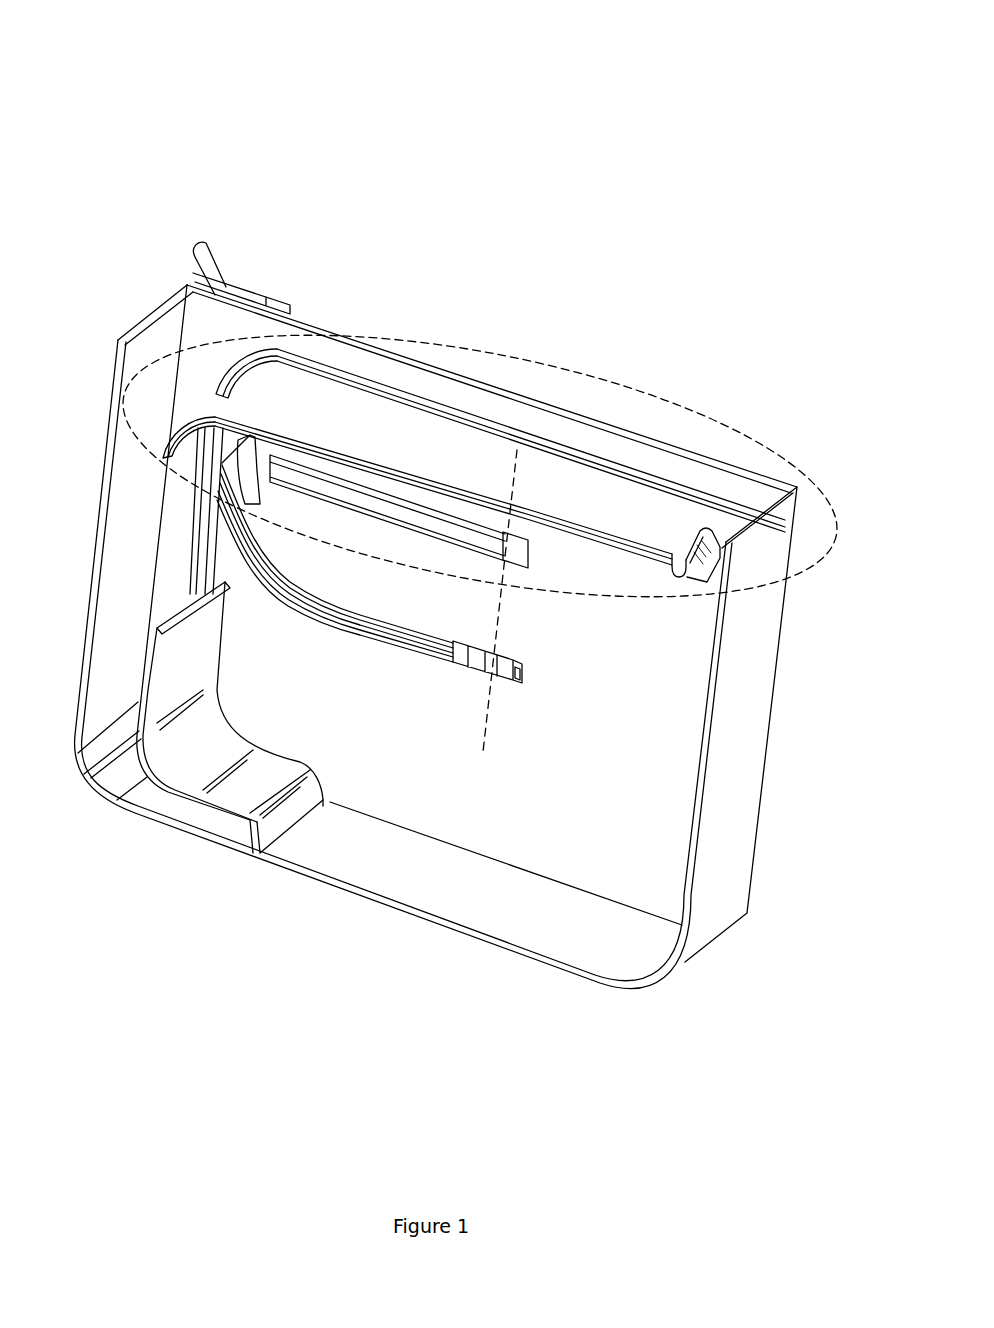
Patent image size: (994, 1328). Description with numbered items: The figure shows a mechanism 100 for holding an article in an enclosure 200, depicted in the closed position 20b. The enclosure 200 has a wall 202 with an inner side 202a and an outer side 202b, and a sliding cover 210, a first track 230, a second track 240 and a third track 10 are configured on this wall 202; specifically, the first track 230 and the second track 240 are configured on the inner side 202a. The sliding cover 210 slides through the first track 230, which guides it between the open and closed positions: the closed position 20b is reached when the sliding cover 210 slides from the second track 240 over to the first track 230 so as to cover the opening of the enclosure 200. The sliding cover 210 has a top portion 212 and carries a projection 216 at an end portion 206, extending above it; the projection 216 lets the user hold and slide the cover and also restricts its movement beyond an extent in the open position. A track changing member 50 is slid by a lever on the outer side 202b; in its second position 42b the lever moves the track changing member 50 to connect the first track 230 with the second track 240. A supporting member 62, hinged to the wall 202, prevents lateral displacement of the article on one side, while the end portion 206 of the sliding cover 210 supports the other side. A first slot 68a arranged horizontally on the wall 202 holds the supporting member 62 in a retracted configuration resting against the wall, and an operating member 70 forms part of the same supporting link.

The mechanism 100 is at (519, 156).
The third track 10 is at (365, 637).
The closed position 20b is at (538, 360).
The second position 42b is at (217, 255).
The track changing member 50 is at (196, 479).
The supporting member 62 is at (530, 557).
The first slot 68a is at (390, 520).
The operating member 70 is at (488, 676).
The enclosure 200 is at (314, 900).
The wall 202 is at (625, 398).
The inner side 202a is at (567, 868).
The outer side 202b is at (740, 773).
The end portion 206 is at (690, 580).
The sliding cover 210 is at (433, 405).
The top portion 212 is at (642, 506).
The projection 216 is at (705, 528).
The first track 230 is at (214, 396).
The second track 240 is at (188, 586).